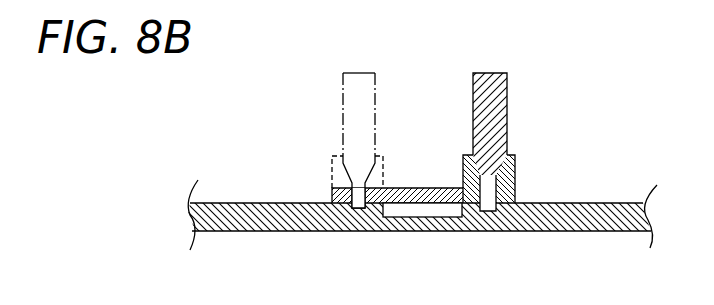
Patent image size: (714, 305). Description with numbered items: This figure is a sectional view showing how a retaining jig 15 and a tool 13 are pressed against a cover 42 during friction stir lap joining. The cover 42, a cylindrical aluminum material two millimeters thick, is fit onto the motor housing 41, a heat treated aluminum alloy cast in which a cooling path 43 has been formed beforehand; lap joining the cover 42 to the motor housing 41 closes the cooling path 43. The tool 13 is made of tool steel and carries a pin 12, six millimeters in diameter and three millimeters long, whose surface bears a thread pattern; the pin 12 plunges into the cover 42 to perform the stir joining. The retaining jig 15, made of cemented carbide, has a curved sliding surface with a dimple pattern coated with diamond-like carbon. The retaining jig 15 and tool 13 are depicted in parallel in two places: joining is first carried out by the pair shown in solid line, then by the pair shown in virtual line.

The pin 12 is at (488, 210).
The tool 13 is at (343, 93).
The retaining jig 15 is at (332, 176).
The motor housing 41 is at (235, 202).
The cover 42 is at (425, 188).
The cooling path 43 is at (418, 211).